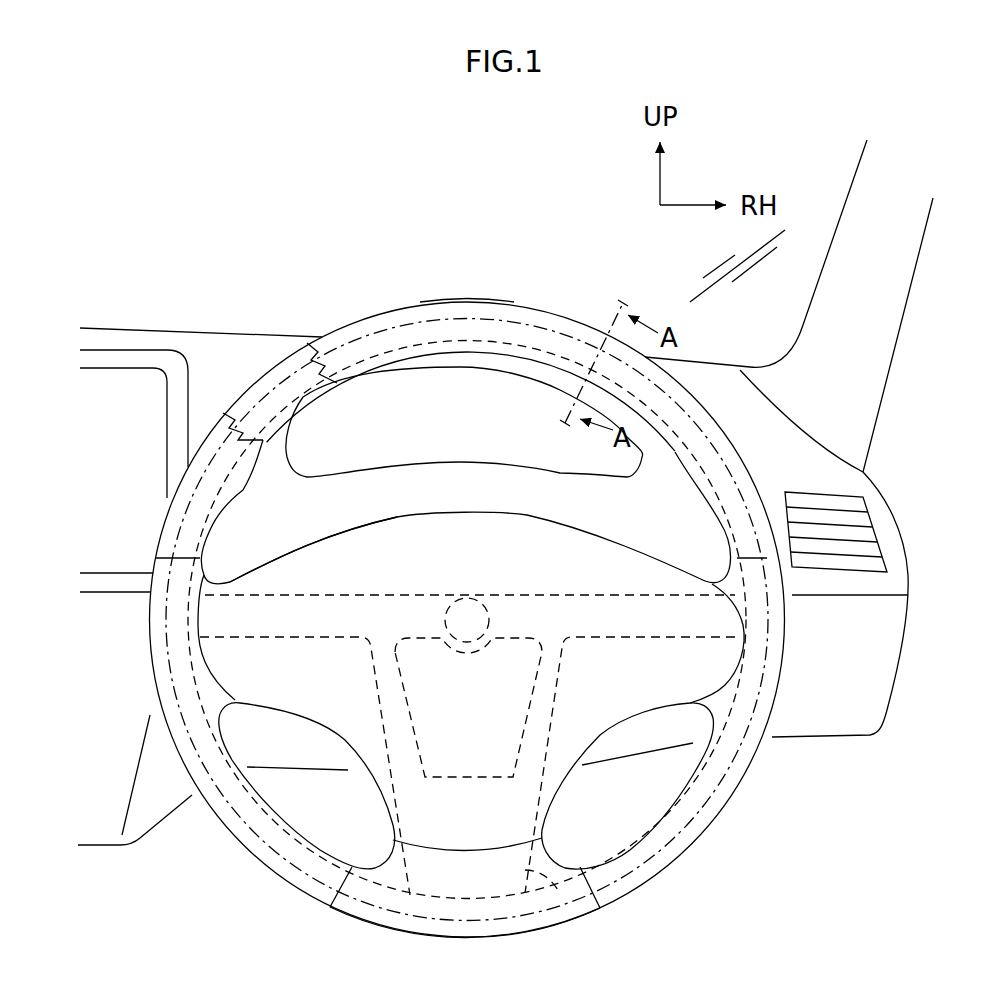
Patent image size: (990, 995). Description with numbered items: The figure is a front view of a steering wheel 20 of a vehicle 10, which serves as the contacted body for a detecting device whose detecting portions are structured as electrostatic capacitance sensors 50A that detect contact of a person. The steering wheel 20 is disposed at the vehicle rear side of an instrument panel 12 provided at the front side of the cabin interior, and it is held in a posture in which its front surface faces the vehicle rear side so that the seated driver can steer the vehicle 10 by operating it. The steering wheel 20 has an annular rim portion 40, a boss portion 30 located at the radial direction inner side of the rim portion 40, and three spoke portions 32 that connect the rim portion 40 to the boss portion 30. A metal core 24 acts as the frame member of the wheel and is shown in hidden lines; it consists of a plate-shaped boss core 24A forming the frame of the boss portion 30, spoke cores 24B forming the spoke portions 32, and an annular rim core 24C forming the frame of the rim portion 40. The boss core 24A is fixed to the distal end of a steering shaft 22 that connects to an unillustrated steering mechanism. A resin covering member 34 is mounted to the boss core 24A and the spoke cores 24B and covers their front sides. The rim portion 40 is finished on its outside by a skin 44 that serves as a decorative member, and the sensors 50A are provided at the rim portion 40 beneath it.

The vehicle 10 is at (421, 187).
The instrument panel 12 is at (172, 338).
The steering wheel 20 is at (557, 262).
The steering shaft 22 is at (485, 600).
The core 24 is at (431, 590).
The boss core 24A is at (567, 597).
The spoke cores 24B is at (245, 637).
The rim core 24C is at (682, 833).
The boss portion 30 is at (457, 510).
The spoke portions 32 is at (232, 580).
The covering member 34 is at (368, 553).
The rim portion 40 is at (376, 313).
The skin 44 is at (440, 300).
The electrostatic capacitance sensors 50A is at (283, 370).